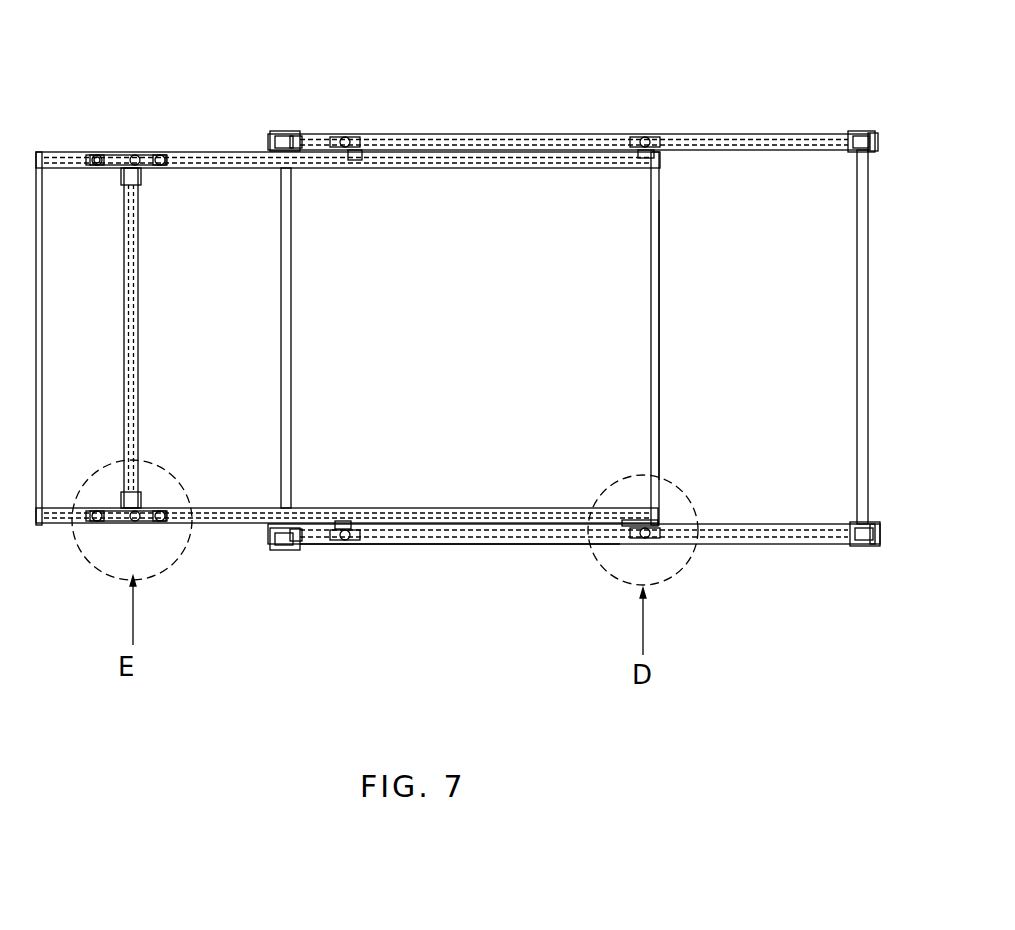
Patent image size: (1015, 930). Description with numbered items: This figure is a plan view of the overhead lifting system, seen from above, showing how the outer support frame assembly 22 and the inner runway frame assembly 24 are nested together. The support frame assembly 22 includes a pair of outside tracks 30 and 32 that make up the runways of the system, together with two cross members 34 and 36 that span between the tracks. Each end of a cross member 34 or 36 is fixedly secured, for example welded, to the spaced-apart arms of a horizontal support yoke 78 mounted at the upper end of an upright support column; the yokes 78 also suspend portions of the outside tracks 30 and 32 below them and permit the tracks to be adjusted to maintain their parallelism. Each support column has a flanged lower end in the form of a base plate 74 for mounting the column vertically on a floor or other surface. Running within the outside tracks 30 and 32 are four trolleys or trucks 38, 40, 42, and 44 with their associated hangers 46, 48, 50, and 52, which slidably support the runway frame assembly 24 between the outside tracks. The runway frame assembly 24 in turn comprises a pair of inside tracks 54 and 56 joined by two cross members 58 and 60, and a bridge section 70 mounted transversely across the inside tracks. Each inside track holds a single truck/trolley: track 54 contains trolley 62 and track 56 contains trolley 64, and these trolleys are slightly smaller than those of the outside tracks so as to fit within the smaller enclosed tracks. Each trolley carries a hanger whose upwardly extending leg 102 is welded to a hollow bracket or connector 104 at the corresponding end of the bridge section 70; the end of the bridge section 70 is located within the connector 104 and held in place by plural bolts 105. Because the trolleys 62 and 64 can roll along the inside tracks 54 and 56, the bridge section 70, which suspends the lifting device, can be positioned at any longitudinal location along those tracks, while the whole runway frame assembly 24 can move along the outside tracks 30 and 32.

The support frame assembly 22 is at (752, 548).
The runway frame assembly 24 is at (648, 367).
The outside track 30 is at (450, 547).
The outside track 32 is at (503, 133).
The cross member 34 is at (292, 366).
The cross member 36 is at (856, 371).
The trolley 38 is at (360, 547).
The trolley 40 is at (625, 547).
The trolley 42 is at (347, 134).
The trolley 44 is at (646, 134).
The hanger 46 is at (350, 524).
The hanger 48 is at (650, 496).
The hanger 50 is at (347, 170).
The hanger 52 is at (635, 170).
The inside track 54 is at (232, 528).
The inside track 56 is at (203, 170).
The cross member 58 is at (46, 366).
The cross member 60 is at (659, 340).
The trolley 62 is at (150, 540).
The trolley 64 is at (133, 150).
The bridge section 70 is at (138, 366).
The base plate 74 is at (875, 135).
The horizontal support yoke 78 is at (268, 130).
The upwardly extending leg 102 is at (121, 184).
The bracket or connector 104 is at (146, 490).
The bolt 105 is at (146, 184).